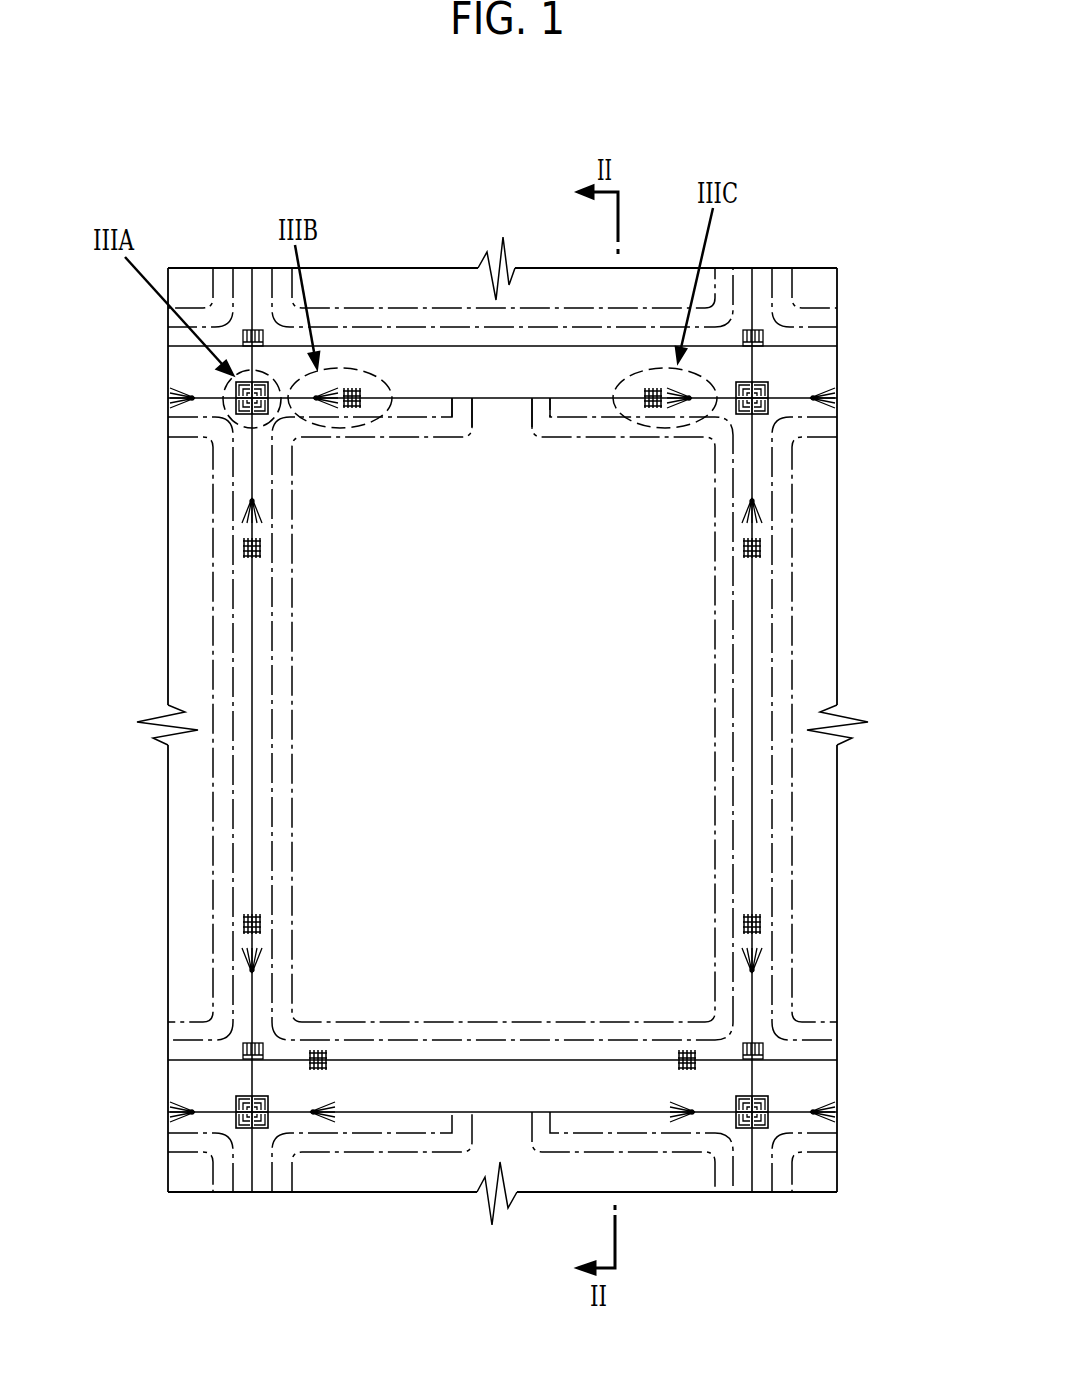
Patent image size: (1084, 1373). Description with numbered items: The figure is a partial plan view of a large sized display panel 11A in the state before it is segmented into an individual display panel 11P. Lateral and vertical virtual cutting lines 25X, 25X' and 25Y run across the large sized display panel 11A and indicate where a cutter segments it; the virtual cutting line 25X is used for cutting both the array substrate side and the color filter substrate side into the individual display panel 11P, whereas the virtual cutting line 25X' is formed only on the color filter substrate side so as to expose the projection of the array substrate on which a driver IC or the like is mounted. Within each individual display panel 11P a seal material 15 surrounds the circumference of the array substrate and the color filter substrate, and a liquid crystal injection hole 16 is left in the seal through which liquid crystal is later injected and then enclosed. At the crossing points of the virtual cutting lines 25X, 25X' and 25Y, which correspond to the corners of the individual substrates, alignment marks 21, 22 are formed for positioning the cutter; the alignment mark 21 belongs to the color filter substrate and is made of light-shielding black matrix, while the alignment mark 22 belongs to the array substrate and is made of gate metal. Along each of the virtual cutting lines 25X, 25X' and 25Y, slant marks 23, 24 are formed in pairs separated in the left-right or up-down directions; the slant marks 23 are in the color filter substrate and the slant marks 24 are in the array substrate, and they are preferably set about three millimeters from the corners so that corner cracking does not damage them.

The large sized display panel 11A is at (508, 177).
The individual display panel 11P is at (393, 515).
The seal material 15 is at (431, 433).
The liquid crystal injection hole 16 is at (500, 416).
The alignment mark 21 is at (240, 405).
The alignment mark 22 is at (240, 1116).
The slant mark 23 is at (352, 410).
The slant mark 24 is at (322, 410).
The virtual cutting line 25X is at (502, 731).
The virtual cutting line 25X' is at (502, 724).
The virtual cutting line 25Y is at (243, 660).